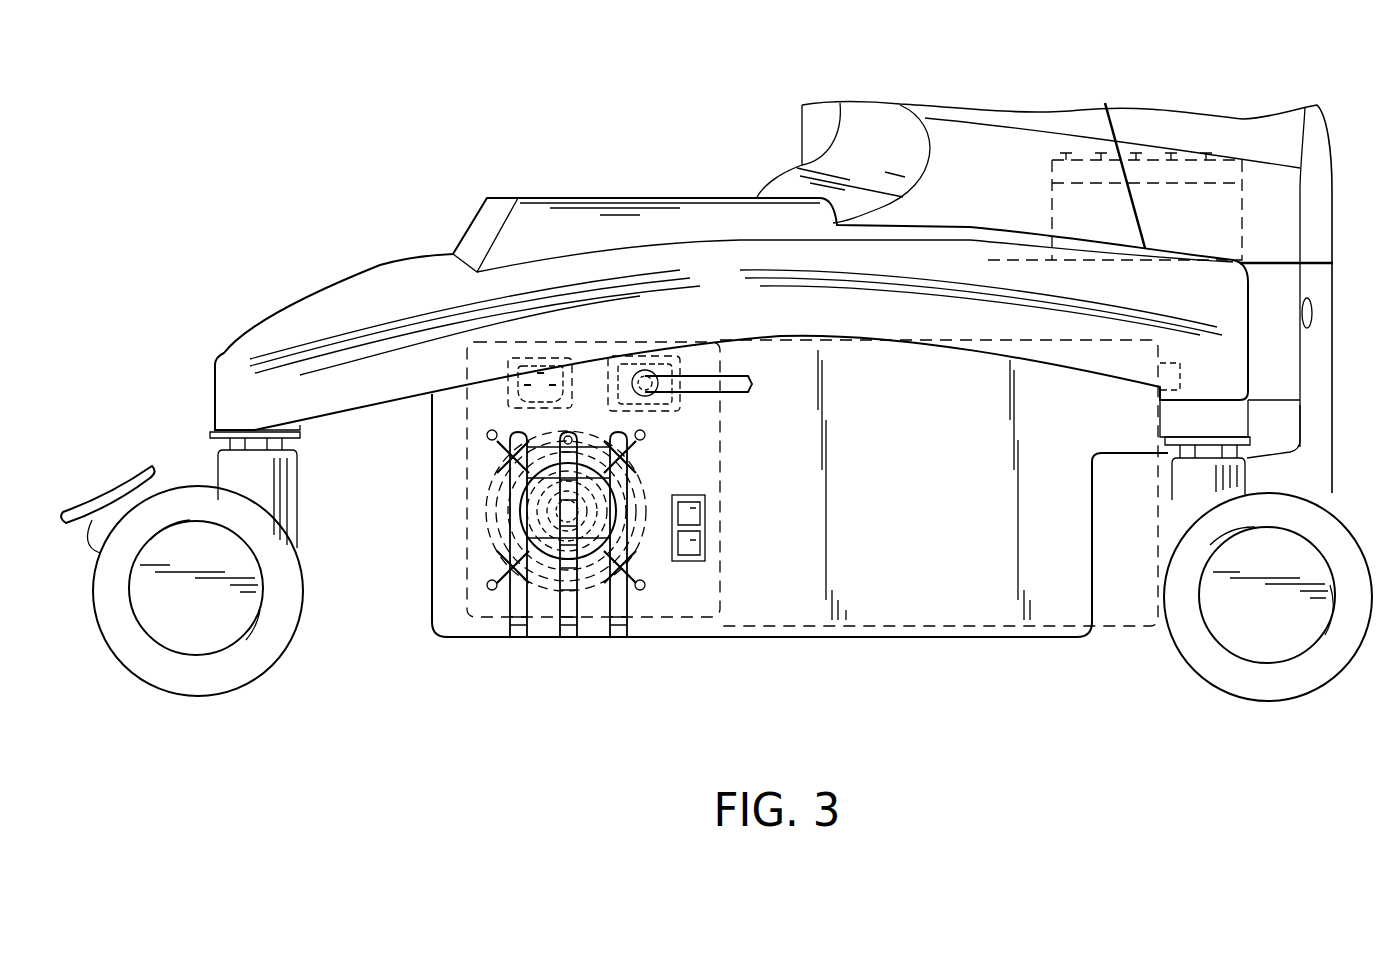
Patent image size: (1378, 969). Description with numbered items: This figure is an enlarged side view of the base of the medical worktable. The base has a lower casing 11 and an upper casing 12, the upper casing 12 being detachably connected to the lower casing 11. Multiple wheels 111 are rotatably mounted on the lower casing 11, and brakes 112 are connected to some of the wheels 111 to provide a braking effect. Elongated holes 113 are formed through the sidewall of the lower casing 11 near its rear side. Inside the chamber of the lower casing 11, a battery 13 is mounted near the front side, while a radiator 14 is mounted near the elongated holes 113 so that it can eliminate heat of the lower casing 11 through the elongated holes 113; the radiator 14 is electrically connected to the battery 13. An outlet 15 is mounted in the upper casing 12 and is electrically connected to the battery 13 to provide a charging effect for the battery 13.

The lower casing 11 is at (453, 608).
The wheels 111 is at (255, 657).
The brakes 112 is at (150, 470).
The elongated holes 113 is at (520, 637).
The upper casing 12 is at (1190, 122).
The battery 13 is at (885, 600).
The radiator 14 is at (663, 603).
The outlet 15 is at (1072, 160).